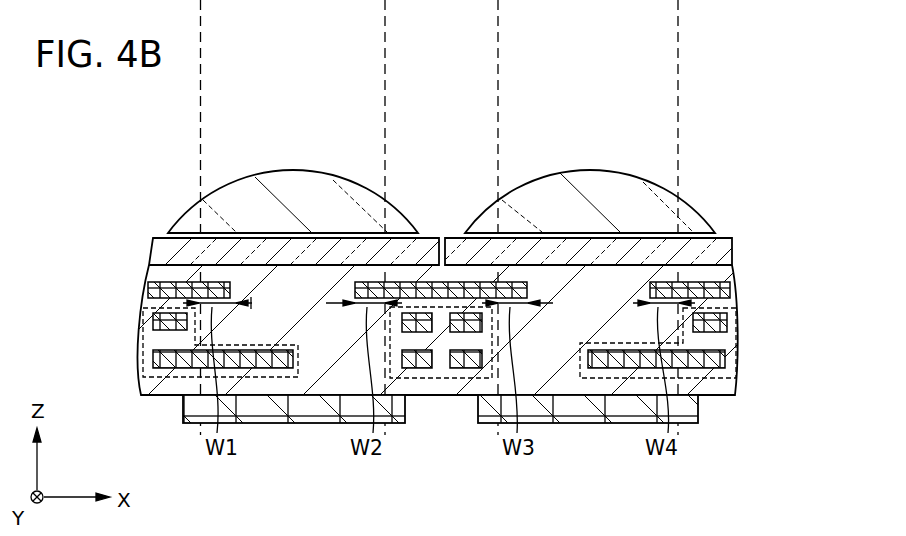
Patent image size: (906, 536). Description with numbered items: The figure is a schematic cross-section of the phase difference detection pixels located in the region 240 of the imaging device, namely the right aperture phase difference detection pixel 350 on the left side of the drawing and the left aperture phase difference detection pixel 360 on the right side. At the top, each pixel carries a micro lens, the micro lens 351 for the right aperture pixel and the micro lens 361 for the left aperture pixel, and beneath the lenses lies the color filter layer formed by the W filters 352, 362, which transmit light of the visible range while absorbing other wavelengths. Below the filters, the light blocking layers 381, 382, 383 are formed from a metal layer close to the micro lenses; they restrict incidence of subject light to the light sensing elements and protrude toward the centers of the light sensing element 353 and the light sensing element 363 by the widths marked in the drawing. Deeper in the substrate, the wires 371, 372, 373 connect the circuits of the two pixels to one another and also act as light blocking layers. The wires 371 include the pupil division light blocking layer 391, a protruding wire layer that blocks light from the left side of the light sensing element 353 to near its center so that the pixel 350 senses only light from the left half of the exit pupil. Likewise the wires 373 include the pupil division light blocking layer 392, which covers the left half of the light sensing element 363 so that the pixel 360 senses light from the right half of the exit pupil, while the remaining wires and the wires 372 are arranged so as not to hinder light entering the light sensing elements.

The region 240 is at (136, 136).
The right aperture phase difference detection pixel 350 is at (292, 136).
The left aperture phase difference detection pixel 360 is at (586, 136).
The micro lens 351 is at (248, 178).
The micro lens 361 is at (628, 182).
The W filter 352 is at (152, 258).
The W filter 362 is at (726, 258).
The light blocking layer 381 is at (148, 292).
The light blocking layer 382 is at (431, 287).
The light blocking layer 383 is at (726, 290).
The wires 371 is at (152, 380).
The wires 372 is at (447, 378).
The wires 373 is at (718, 378).
The pupil division light blocking layer 391 is at (257, 362).
The pupil division light blocking layer 392 is at (618, 362).
The light sensing element 353 is at (318, 415).
The light sensing element 363 is at (565, 415).